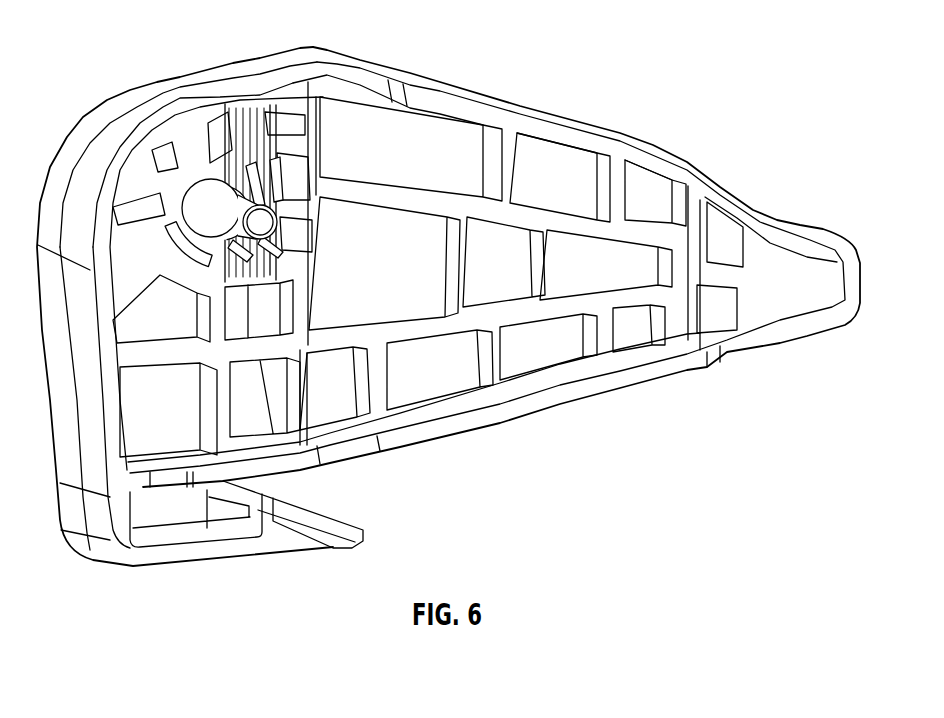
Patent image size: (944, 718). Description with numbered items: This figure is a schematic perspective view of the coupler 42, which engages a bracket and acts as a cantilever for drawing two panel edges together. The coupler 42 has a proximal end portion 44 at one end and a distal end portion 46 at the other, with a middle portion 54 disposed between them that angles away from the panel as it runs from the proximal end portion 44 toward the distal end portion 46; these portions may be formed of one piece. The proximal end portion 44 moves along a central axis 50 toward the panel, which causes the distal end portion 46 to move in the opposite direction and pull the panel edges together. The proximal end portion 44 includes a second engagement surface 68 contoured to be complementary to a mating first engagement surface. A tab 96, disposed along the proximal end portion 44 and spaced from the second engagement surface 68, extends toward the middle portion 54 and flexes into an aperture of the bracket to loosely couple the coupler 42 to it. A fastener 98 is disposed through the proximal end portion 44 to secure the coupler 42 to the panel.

The coupler 42 is at (751, 141).
The proximal end portion 44 is at (97, 99).
The distal end portion 46 is at (821, 347).
The central axis 50 is at (337, 251).
The middle portion 54 is at (488, 87).
The second engagement surface 68 is at (241, 145).
The tab 96 is at (270, 521).
The fastener 98 is at (213, 198).